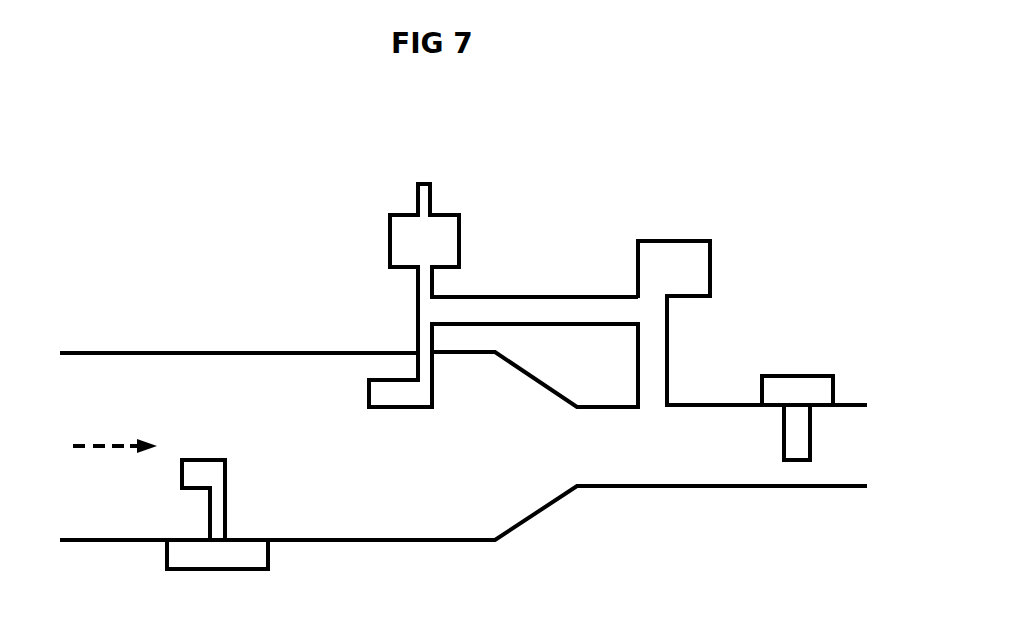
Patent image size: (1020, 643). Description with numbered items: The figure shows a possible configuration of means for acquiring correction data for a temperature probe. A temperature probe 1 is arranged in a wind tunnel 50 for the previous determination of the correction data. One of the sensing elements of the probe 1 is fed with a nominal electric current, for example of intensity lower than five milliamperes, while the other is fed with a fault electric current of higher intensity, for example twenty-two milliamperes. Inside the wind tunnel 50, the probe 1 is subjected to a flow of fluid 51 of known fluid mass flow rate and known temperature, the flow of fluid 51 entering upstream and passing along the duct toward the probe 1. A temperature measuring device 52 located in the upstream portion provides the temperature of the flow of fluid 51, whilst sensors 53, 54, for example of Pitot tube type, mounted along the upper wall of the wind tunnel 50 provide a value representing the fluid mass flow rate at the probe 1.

The wind tunnel 50 is at (604, 173).
The flow of fluid 51 is at (96, 444).
The temperature measuring device 52 is at (204, 472).
The sensor 53 is at (447, 237).
The sensor 54 is at (697, 263).
The temperature probe 1 is at (768, 432).